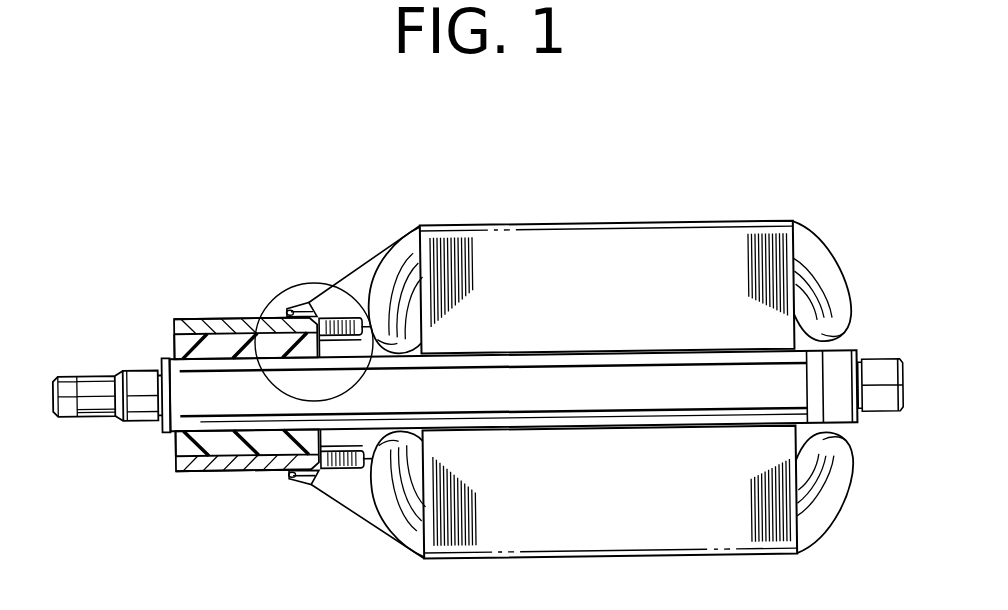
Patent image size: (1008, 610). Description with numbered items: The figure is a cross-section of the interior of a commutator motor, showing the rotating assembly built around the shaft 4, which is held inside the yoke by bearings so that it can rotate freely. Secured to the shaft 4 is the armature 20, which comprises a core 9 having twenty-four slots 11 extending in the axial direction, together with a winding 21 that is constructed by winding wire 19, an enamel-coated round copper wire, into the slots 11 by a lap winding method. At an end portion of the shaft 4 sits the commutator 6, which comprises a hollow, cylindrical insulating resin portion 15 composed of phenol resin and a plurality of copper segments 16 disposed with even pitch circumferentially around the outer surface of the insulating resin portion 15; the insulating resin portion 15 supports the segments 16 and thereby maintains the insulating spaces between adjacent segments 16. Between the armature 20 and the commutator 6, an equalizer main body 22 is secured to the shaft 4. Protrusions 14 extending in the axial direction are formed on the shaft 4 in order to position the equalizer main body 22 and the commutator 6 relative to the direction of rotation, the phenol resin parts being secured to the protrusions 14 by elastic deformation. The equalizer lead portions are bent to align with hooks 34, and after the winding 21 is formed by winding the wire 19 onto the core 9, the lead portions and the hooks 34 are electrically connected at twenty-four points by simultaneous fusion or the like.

The shaft 4 is at (193, 398).
The commutator 6 is at (178, 348).
The core 9 is at (672, 243).
The slots 11 is at (407, 233).
The protrusions 14 is at (738, 404).
The insulating resin portion 15 is at (170, 445).
The segments 16 is at (212, 317).
The wire 19 is at (348, 292).
The armature 20 is at (559, 217).
The winding 21 is at (828, 282).
The equalizer main body 22 is at (343, 472).
The hooks 34 is at (293, 306).